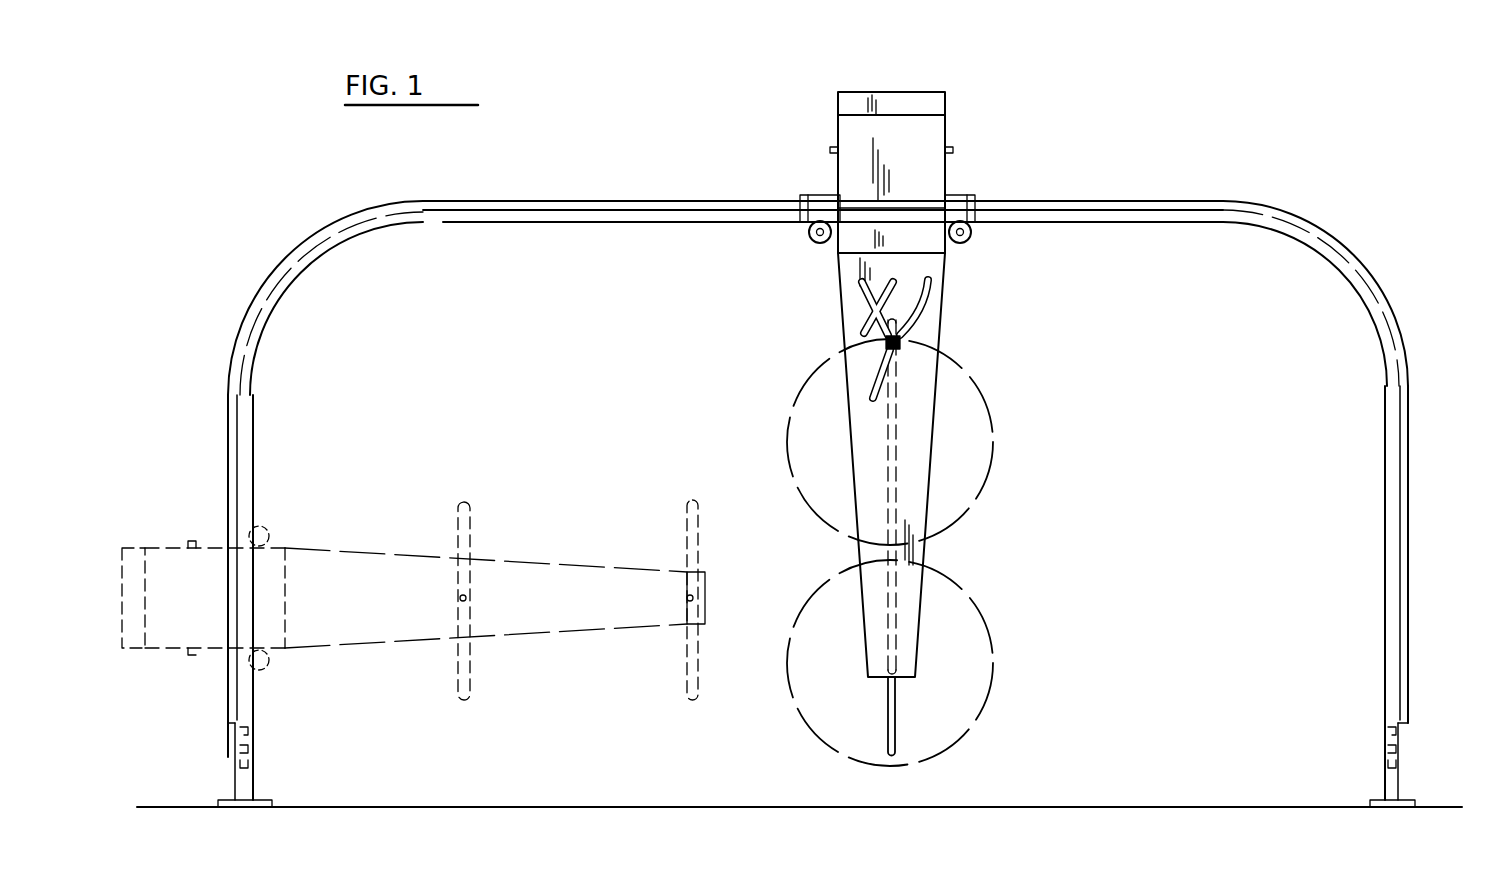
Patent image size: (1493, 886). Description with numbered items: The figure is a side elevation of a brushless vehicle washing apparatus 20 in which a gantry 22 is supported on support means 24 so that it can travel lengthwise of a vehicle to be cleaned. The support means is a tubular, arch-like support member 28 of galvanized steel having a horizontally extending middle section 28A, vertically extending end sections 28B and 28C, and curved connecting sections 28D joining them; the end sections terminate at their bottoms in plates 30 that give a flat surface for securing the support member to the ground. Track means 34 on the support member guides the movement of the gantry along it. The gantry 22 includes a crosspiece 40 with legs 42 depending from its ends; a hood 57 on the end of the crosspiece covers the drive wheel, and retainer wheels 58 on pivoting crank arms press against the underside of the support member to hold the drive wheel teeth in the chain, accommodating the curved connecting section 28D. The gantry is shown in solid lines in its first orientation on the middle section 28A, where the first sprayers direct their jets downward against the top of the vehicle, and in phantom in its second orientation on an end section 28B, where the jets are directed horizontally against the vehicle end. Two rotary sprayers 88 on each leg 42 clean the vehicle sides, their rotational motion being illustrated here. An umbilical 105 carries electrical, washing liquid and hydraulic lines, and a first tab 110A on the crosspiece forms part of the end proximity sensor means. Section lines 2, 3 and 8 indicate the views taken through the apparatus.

The brushless vehicle washing apparatus 20 is at (1195, 62).
The gantry 22 is at (578, 504).
The support means 24 is at (805, 472).
The support member 28 is at (805, 479).
The middle section 28A is at (556, 214).
The end section 28B is at (228, 462).
The end section 28C is at (1420, 512).
The curved connecting section 28D is at (305, 277).
The plate 30 is at (268, 800).
The track means 34 is at (428, 198).
The crosspiece 40 is at (890, 146).
The leg 42 is at (905, 504).
The hood 57 is at (930, 130).
The retainer wheel 58 is at (812, 244).
The rotary sprayer 88 is at (473, 522).
The umbilical 105 is at (912, 326).
The first tab 110A is at (830, 150).
The section line 2- 2 is at (750, 95).
The section line 3- 3 is at (815, 120).
The section line 8- 8 is at (205, 680).